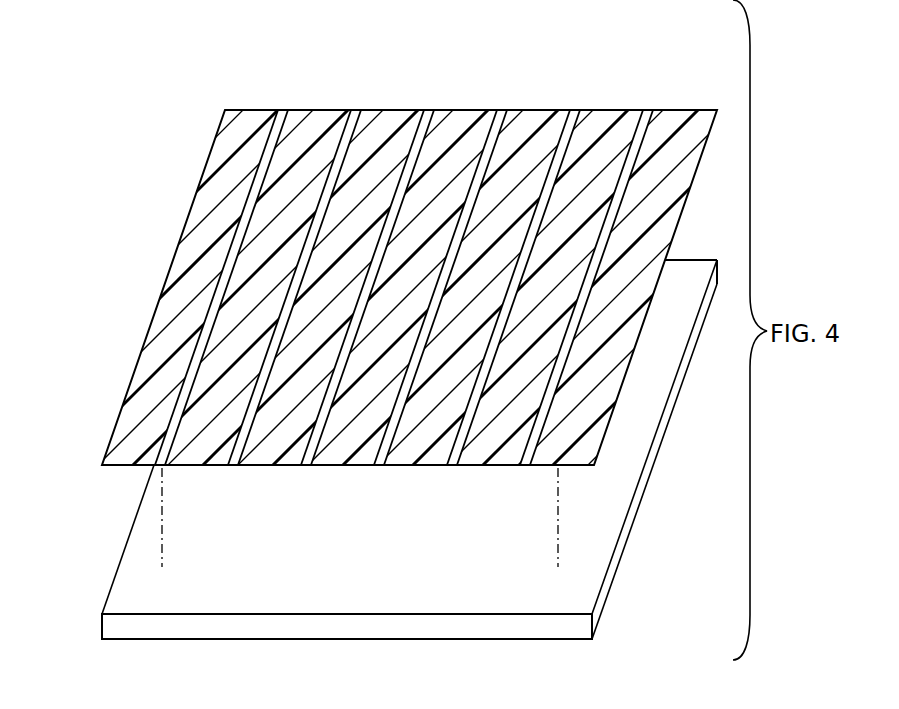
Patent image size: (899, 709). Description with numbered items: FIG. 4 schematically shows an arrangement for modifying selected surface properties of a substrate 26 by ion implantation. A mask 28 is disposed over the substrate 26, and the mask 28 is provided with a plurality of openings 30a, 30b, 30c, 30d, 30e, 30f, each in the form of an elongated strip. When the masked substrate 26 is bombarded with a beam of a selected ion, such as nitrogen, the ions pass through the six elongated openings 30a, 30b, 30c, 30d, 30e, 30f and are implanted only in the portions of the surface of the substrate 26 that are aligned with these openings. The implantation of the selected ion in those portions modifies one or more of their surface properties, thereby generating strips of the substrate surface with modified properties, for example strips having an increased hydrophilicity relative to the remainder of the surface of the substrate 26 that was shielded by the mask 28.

The substrate 26 is at (102, 617).
The mask 28 is at (449, 259).
The opening 30a is at (288, 110).
The opening 30b is at (361, 110).
The opening 30c is at (434, 110).
The opening 30d is at (507, 110).
The opening 30e is at (578, 110).
The opening 30f is at (652, 110).